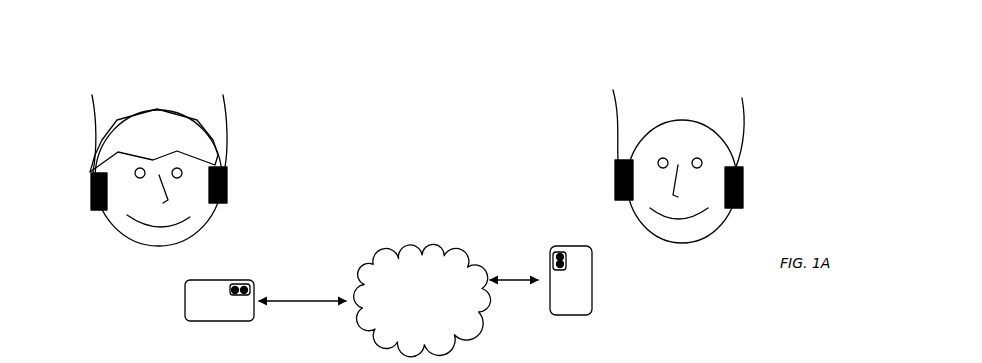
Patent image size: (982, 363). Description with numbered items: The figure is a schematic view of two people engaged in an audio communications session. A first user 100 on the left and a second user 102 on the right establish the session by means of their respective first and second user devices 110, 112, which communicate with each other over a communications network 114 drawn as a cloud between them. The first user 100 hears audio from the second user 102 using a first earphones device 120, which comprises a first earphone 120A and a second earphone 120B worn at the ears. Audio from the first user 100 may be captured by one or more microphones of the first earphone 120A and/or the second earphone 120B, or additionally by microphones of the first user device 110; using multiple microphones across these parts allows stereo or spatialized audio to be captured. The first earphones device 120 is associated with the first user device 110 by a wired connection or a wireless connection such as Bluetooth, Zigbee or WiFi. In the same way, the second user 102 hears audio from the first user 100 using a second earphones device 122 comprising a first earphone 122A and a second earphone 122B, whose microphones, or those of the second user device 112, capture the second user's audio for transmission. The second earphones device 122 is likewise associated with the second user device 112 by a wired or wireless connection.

The first user 100 is at (150, 124).
The second user 102 is at (675, 131).
The first user device 110 is at (185, 293).
The second user device 112 is at (549, 263).
The communications network 114 is at (372, 260).
The first earphones device 120 is at (139, 119).
The first earphone 120A is at (79, 148).
The second earphone 120B is at (205, 144).
The second earphones device 122 is at (661, 117).
The first earphone 122A is at (603, 142).
The second earphone 122B is at (731, 144).